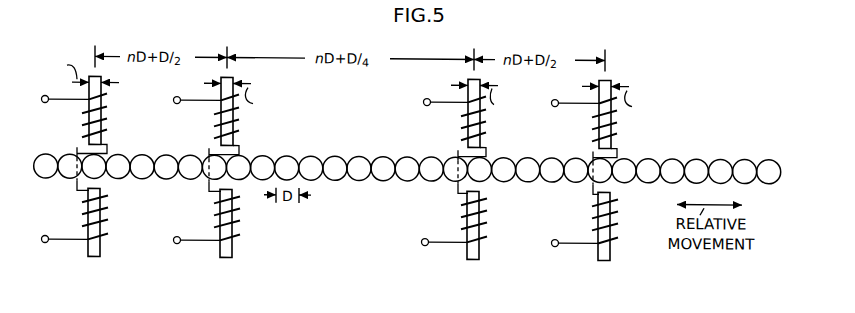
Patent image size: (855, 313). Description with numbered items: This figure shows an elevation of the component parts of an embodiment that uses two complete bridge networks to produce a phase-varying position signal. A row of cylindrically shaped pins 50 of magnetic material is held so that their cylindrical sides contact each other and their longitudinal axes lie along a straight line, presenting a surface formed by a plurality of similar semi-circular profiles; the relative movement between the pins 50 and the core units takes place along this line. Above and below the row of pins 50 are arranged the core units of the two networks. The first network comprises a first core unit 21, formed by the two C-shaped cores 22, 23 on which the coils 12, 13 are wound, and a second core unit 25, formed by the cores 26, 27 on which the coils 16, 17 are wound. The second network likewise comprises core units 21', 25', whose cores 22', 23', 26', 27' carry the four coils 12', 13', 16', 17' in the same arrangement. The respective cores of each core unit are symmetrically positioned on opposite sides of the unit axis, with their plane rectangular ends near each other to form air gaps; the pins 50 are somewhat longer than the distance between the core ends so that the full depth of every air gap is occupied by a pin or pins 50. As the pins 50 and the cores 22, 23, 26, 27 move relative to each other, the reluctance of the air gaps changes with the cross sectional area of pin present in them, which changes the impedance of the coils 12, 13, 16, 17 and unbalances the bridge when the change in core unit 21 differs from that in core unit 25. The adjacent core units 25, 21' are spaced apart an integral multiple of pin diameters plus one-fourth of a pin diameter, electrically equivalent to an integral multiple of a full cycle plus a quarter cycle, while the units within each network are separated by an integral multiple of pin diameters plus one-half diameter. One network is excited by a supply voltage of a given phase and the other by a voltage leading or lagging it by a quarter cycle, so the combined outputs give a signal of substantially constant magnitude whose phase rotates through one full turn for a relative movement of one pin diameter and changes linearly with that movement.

The coil 12 is at (110, 110).
The coil 13 is at (109, 222).
The coil 16 is at (243, 111).
The coil 17 is at (241, 223).
The first core unit 21 is at (91, 172).
The core 22 is at (90, 104).
The core 23 is at (87, 253).
The second core unit 25 is at (225, 183).
The core 26 is at (207, 112).
The core 27 is at (218, 255).
The coil 12' is at (492, 114).
The coil 13' is at (491, 225).
The coil 16' is at (623, 115).
The coil 17' is at (621, 226).
The core unit 21' is at (473, 185).
The upper winding of third pole unit 22' is at (455, 113).
The lower winding of third pole unit 23' is at (468, 256).
The core unit 25' is at (603, 186).
The upper winding of fourth pole unit 26' is at (585, 115).
The lower winding of fourth pole unit 27' is at (597, 256).
The pins 50 is at (767, 159).